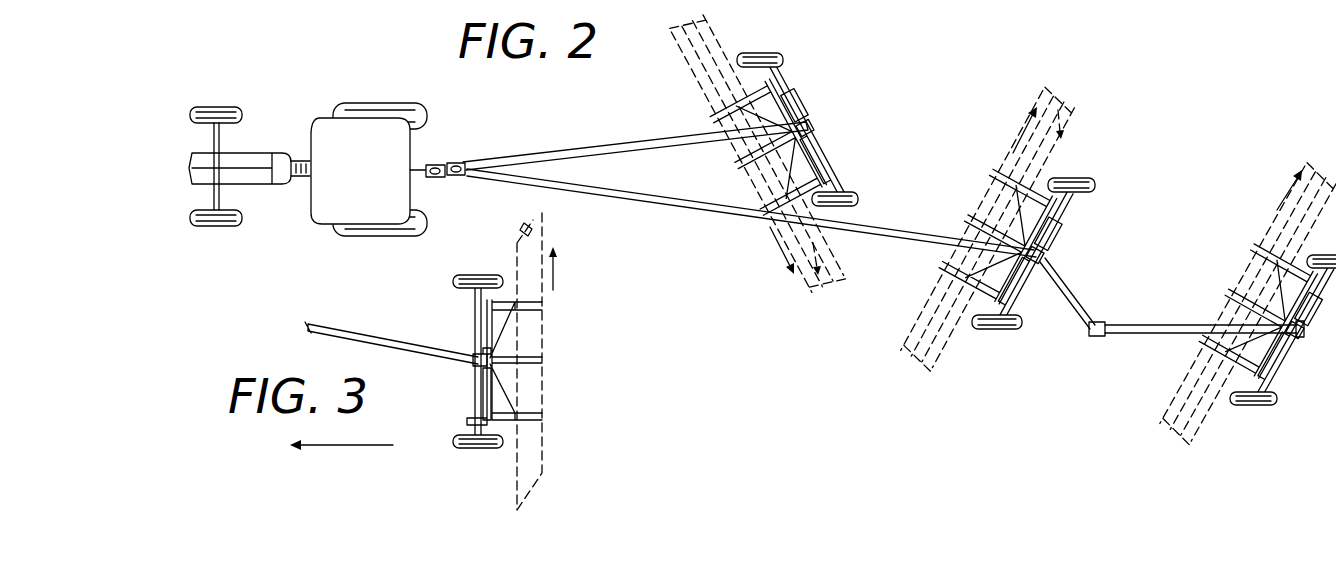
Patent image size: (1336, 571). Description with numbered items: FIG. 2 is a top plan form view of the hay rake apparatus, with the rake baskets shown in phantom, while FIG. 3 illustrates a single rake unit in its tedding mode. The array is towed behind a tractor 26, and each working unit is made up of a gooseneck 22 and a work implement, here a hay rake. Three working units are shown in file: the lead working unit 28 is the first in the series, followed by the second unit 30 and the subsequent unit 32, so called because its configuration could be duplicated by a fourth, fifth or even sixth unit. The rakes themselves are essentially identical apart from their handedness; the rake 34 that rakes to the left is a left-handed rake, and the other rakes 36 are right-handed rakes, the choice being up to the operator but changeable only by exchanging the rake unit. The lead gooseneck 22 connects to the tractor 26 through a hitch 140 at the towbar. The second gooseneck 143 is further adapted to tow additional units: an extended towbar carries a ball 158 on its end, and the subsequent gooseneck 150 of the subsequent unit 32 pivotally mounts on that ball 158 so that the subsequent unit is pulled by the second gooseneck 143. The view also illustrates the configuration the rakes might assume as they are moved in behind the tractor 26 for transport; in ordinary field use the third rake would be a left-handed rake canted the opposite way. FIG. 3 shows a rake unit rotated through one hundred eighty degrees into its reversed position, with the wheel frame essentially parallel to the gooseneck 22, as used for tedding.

The gooseneck 22 is at (618, 148).
The tractor 26 is at (272, 126).
The lead working unit 28 is at (697, 119).
The second unit 30 is at (959, 220).
The subsequent unit 32 is at (1236, 260).
The left-handed rake 34 is at (750, 185).
The right-handed rakes 36 is at (1010, 157).
The hitch coupling 140 is at (418, 166).
The second gooseneck 143 is at (876, 243).
The subsequent gooseneck 150 is at (1198, 304).
The ball 158 is at (1098, 338).